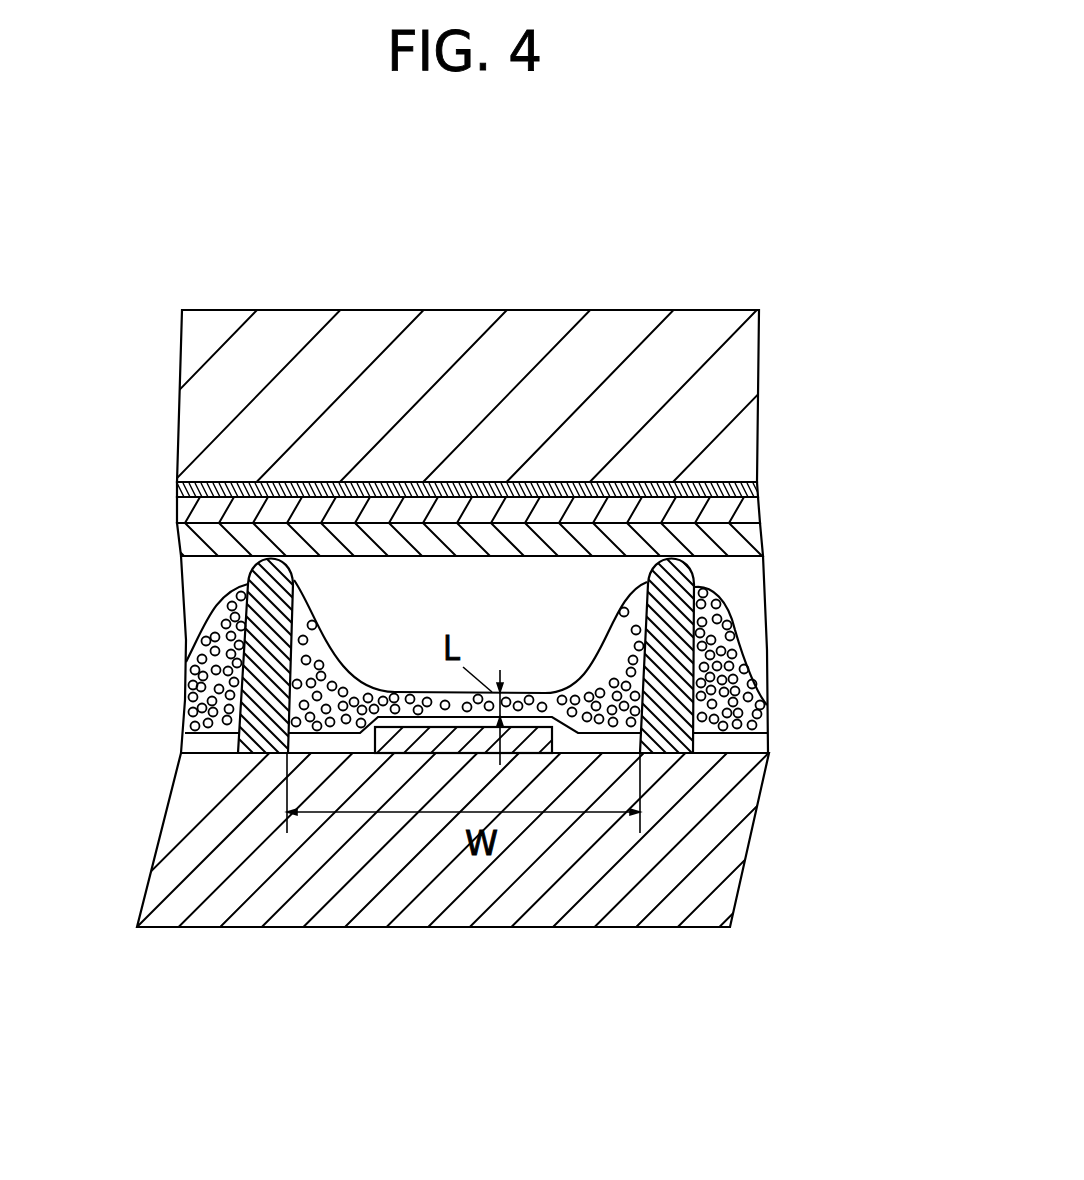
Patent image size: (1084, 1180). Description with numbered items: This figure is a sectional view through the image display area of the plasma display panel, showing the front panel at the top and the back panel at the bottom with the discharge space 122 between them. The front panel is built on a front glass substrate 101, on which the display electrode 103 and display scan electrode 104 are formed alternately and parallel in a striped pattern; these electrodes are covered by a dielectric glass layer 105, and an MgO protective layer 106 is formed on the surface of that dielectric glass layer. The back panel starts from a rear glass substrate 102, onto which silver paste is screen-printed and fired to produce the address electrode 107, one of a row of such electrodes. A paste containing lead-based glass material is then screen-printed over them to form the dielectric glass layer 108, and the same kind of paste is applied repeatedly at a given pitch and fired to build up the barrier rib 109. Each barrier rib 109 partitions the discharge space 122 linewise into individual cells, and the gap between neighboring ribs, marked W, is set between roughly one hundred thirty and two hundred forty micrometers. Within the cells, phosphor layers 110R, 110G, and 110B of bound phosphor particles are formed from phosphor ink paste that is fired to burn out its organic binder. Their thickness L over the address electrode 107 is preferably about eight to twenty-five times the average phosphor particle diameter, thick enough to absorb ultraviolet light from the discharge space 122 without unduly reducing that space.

The front glass substrate 101 is at (743, 388).
The rear glass substrate 102 is at (733, 833).
The display electrode 103 is at (548, 476).
The display scan electrode 104 is at (758, 488).
The dielectric glass layer 105 is at (762, 513).
The MgO protective layer 106 is at (765, 538).
The address electrode 107 is at (372, 747).
The dielectric glass layer 108 is at (350, 672).
The barrier rib 109 is at (465, 489).
The phosphor layer 110R is at (193, 668).
The phosphor layer 110G is at (598, 720).
The phosphor layer 110B is at (752, 696).
The discharge space 122 is at (585, 617).